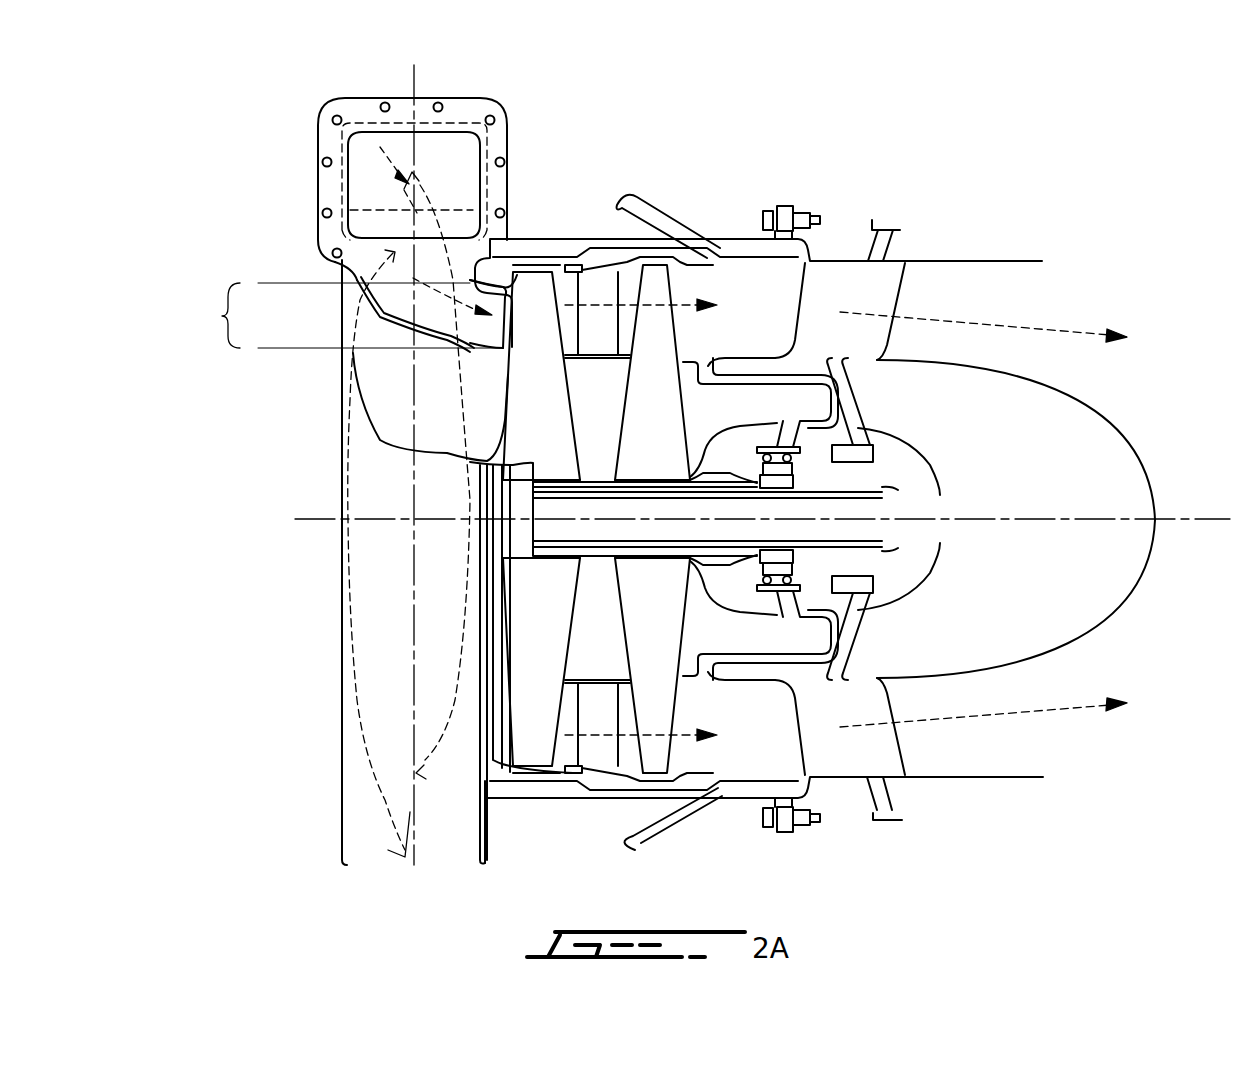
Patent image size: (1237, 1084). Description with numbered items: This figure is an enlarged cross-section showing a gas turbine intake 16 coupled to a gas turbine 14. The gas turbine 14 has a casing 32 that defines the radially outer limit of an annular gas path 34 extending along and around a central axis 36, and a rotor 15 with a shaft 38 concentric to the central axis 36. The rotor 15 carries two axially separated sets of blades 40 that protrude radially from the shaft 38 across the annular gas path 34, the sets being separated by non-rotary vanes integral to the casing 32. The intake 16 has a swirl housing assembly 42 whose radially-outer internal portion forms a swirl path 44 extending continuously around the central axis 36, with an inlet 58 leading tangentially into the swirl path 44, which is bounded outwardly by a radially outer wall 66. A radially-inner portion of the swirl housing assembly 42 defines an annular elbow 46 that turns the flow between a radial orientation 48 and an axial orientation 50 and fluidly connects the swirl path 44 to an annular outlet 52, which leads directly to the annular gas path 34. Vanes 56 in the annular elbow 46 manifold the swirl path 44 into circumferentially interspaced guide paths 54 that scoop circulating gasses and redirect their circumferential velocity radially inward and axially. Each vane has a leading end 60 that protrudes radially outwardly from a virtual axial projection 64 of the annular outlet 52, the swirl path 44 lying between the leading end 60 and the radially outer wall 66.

The gas turbine 14 is at (800, 267).
The rotor 15 is at (840, 493).
The gas turbine intake 16 is at (417, 243).
The casing 32 is at (618, 255).
The annular gas path 34 is at (710, 285).
The central axis 36 is at (1090, 518).
The shaft 38 is at (882, 490).
The blades 40 is at (670, 670).
The swirl housing assembly 42 is at (343, 518).
The swirl path 44 is at (367, 153).
The annular elbow 46 is at (340, 263).
The radial orientation 48 is at (410, 87).
The axial orientation 50 is at (478, 238).
The annular outlet 52 is at (490, 327).
The guide paths 54 is at (453, 270).
The vanes 56 is at (423, 253).
The inlet 58 is at (452, 145).
The leading end 60 is at (455, 222).
The virtual axial projection 64 is at (343, 315).
The radially outer wall 66 is at (455, 103).